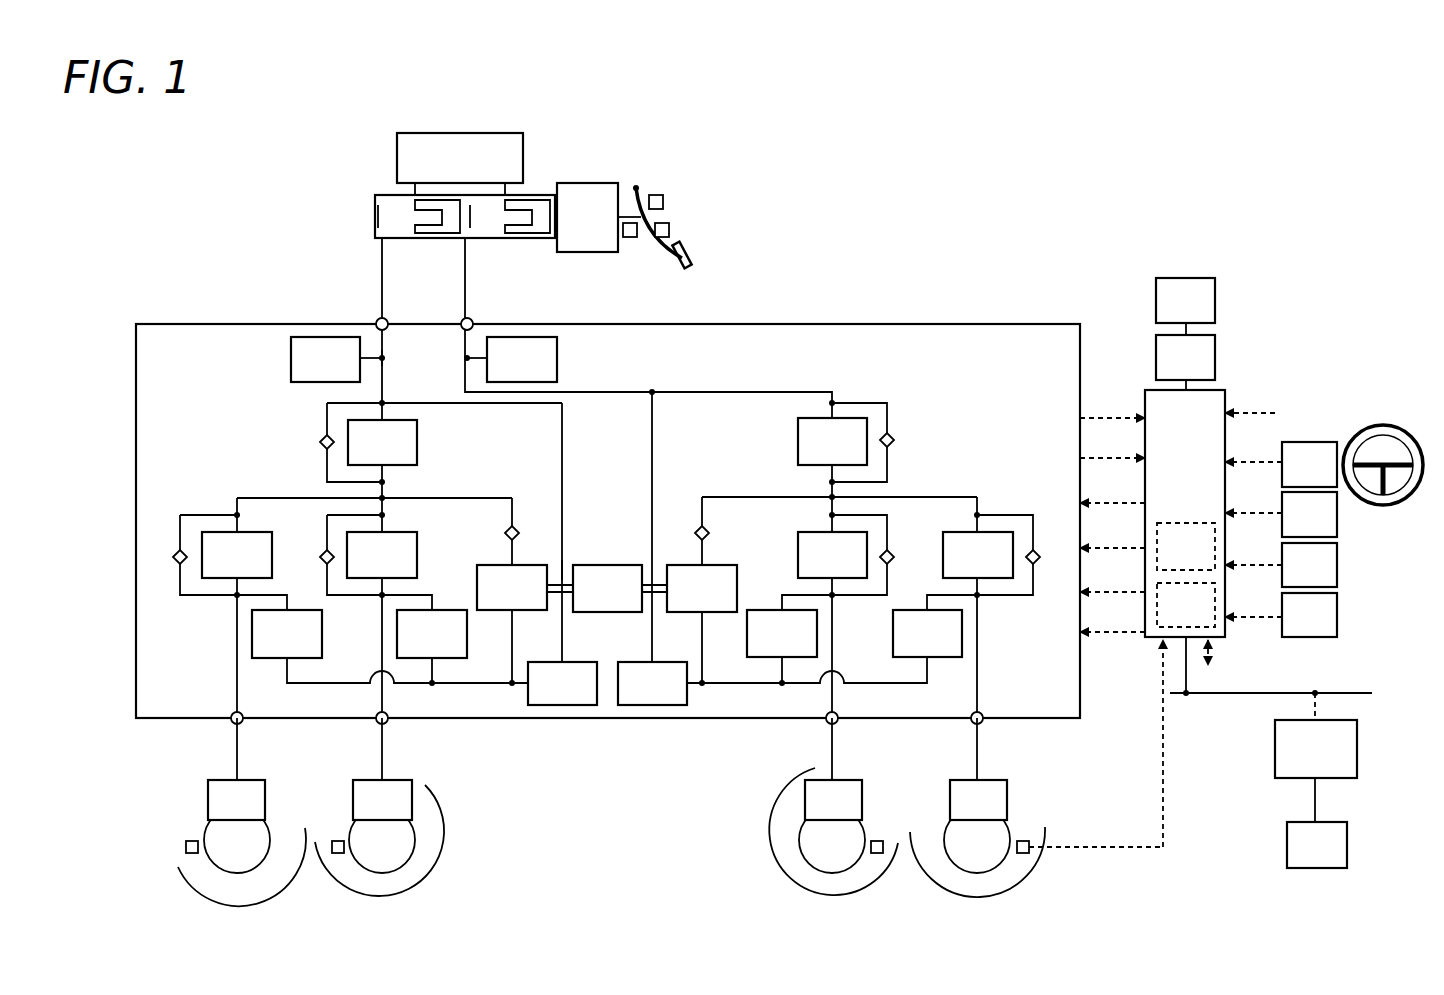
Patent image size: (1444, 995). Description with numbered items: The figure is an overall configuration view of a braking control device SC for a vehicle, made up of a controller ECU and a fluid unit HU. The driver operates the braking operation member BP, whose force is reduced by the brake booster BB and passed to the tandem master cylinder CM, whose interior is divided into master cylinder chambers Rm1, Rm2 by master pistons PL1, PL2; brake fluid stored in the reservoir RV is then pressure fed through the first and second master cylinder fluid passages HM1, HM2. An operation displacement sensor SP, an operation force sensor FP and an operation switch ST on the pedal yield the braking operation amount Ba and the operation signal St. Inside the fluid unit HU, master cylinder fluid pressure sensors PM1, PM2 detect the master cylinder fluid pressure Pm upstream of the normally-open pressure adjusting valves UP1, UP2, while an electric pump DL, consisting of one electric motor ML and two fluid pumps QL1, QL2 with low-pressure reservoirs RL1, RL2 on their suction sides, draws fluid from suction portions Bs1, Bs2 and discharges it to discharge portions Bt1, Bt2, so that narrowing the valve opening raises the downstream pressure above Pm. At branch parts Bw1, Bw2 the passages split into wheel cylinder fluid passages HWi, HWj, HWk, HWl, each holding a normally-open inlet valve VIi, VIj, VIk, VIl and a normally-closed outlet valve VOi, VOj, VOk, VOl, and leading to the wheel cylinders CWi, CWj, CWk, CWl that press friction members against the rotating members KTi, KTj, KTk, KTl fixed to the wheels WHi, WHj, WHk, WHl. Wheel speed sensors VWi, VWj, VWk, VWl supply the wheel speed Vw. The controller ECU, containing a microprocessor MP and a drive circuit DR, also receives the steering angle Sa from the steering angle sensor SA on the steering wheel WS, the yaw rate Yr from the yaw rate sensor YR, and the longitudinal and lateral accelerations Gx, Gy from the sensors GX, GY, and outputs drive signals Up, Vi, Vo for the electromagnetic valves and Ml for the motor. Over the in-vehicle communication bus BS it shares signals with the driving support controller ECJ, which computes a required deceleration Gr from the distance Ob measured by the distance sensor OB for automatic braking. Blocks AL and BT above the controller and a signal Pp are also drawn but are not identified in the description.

The reservoir RV is at (460, 164).
The master cylinder CM is at (383, 196).
The brake booster BB is at (599, 217).
The operation displacement sensor SP is at (663, 199).
The operation switch ST is at (668, 226).
The braking operation member BP is at (679, 228).
The operation force sensor FP is at (631, 238).
The master cylinder chamber Rm2 is at (383, 227).
The master piston PL2 is at (452, 230).
The master cylinder chamber Rm1 is at (483, 233).
The master piston PL1 is at (547, 233).
The fluid unit HU is at (218, 303).
The braking control device SC is at (852, 292).
The master cylinder fluid pressure sensor PM2 is at (336, 359).
The second master cylinder fluid passage HM2 is at (400, 350).
The master cylinder fluid pressure sensor PM1 is at (512, 359).
The suction portion Bs1 is at (655, 389).
The first master cylinder fluid passage HM1 is at (733, 391).
The suction portion Bs2 is at (385, 405).
The pressure adjusting valve UP2 is at (382, 442).
The pressure adjusting valve UP1 is at (832, 441).
The discharge portion Bt2 is at (384, 497).
The branch part Bw2 is at (463, 483).
The discharge portion Bt1 is at (830, 497).
The branch part Bw1 is at (804, 483).
The electric pump DL is at (607, 542).
The inlet valve VIj is at (237, 555).
The inlet valve VIk is at (382, 555).
The inlet valve VIl is at (832, 555).
The inlet valve VIi is at (978, 555).
The outlet valve VOj is at (287, 634).
The outlet valve VOk is at (432, 634).
The outlet valve VOl is at (782, 633).
The outlet valve VOi is at (927, 633).
The fluid pump QL2 is at (512, 587).
The electric motor ML is at (607, 588).
The fluid pump QL1 is at (702, 588).
The low-pressure reservoir RL2 is at (562, 683).
The low-pressure reservoir RL1 is at (652, 683).
The alternator AL is at (1185, 306).
The battery BT is at (1185, 362).
The controller ECU is at (1185, 513).
The microprocessor MP is at (1186, 546).
The drive circuit DR is at (1186, 605).
The master cylinder fluid pressure Pm is at (1112, 403).
The pressure signal Pp is at (1112, 443).
The drive signal Ml is at (1112, 488).
The drive signal Up is at (1112, 533).
The drive signal Vi is at (1112, 577).
The drive signal Vo is at (1112, 617).
The braking operation amount Ba is at (1272, 412).
The operation signal St is at (1297, 412).
The steering angle sensor SA is at (1309, 464).
The steering angle Sa is at (1253, 447).
The yaw rate sensor YR is at (1309, 514).
The yaw rate Yr is at (1253, 498).
The longitudinal acceleration sensor GX is at (1309, 565).
The longitudinal acceleration Gx is at (1253, 550).
The lateral acceleration sensor GY is at (1309, 615).
The lateral acceleration Gy is at (1253, 602).
The steering operation member WS is at (1385, 428).
The required deceleration Gr is at (1226, 659).
The in-vehicle communication bus BS is at (1271, 666).
The driving support controller ECJ is at (1316, 735).
The distance Ob is at (1336, 800).
The distance sensor OB is at (1317, 845).
The wheel speed Vw is at (1119, 743).
The wheel cylinder fluid passage HWj is at (239, 730).
The wheel cylinder fluid passage HWk is at (384, 730).
The wheel cylinder fluid passage HWl is at (834, 730).
The wheel cylinder fluid passage HWi is at (979, 730).
The wheel cylinder CWj is at (236, 800).
The wheel cylinder CWk is at (382, 800).
The wheel cylinder CWl is at (833, 800).
The wheel cylinder CWi is at (978, 800).
The rotating member KTj is at (237, 840).
The rotating member KTk is at (382, 840).
The rotating member KTl is at (832, 840).
The rotating member KTi is at (977, 840).
The wheel speed sensor VWj is at (192, 840).
The wheel speed sensor VWk is at (338, 840).
The wheel speed sensor VWl is at (877, 840).
The wheel speed sensor VWi is at (1023, 840).
The wheel WHj is at (178, 868).
The wheel WHk is at (448, 870).
The wheel WHl is at (772, 868).
The wheel WHi is at (1040, 870).